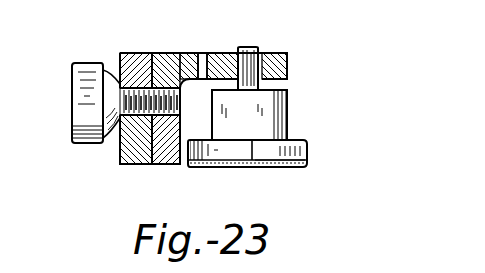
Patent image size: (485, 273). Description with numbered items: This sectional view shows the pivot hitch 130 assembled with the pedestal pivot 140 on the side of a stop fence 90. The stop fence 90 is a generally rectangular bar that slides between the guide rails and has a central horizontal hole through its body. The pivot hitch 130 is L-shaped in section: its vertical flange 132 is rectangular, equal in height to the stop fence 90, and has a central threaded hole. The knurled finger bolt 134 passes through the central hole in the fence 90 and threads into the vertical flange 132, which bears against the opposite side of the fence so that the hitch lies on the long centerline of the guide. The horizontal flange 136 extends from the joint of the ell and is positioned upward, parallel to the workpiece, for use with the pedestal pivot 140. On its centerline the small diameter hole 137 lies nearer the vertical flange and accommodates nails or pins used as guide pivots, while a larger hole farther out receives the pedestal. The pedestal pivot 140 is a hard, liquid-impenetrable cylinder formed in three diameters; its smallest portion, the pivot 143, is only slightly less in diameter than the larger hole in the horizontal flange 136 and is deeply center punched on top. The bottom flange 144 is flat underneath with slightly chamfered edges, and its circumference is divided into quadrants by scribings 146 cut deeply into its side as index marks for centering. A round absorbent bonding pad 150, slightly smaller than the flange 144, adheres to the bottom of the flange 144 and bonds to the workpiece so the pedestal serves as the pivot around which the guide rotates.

The stop fence 90 is at (117, 152).
The pivot hitch 130 is at (181, 51).
The vertical flange 132 is at (168, 166).
The knurled finger bolt 134 is at (78, 90).
The horizontal flange 136 is at (288, 73).
The small diameter hole 137 is at (203, 53).
The pedestal pivot 140 is at (298, 117).
The pivot 143 is at (259, 48).
The bottom flange 144 is at (298, 142).
The scribings 146 is at (250, 153).
The bonding pad 150 is at (297, 167).